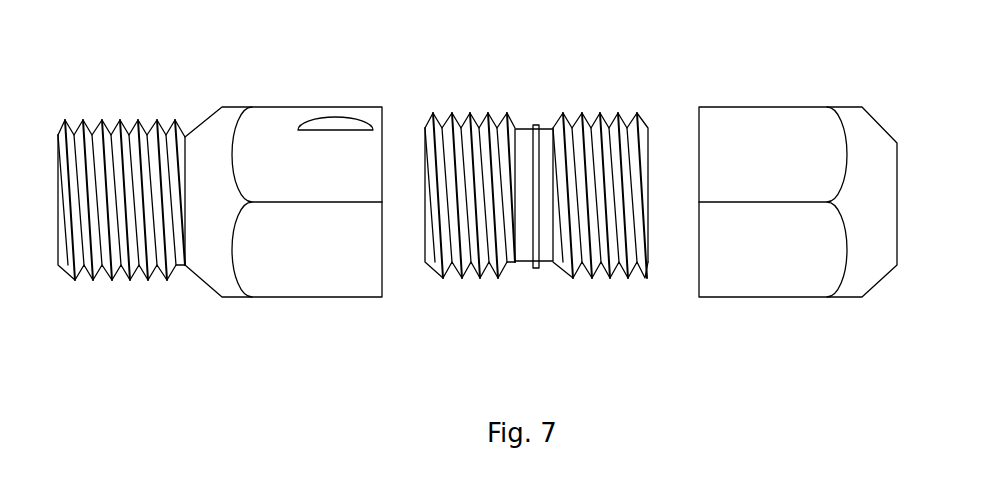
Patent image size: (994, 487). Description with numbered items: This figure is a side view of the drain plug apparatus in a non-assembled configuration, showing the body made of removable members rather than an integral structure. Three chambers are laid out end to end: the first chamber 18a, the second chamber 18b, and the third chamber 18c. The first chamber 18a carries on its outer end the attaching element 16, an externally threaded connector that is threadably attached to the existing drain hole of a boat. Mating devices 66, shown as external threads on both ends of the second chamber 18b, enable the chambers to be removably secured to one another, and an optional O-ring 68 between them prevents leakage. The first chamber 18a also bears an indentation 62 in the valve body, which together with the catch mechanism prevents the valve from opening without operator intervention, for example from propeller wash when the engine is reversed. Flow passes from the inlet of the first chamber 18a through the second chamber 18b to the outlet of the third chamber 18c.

The attaching element 16 is at (145, 123).
The first chamber 18a is at (243, 208).
The second chamber 18b is at (536, 199).
The third chamber 18c is at (743, 280).
The indentation 62 is at (327, 127).
The mating devices 66 is at (470, 112).
The O-ring 68 is at (532, 268).